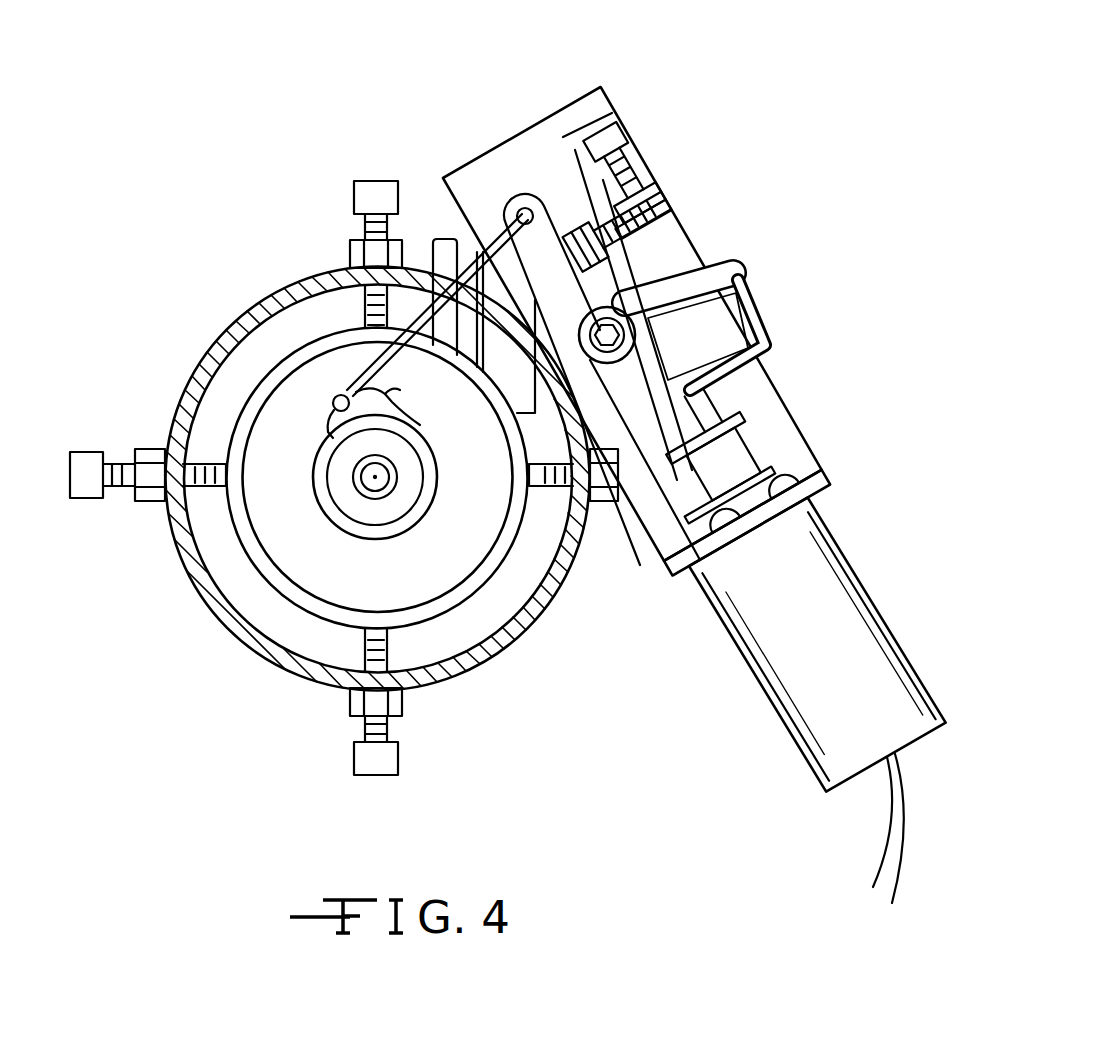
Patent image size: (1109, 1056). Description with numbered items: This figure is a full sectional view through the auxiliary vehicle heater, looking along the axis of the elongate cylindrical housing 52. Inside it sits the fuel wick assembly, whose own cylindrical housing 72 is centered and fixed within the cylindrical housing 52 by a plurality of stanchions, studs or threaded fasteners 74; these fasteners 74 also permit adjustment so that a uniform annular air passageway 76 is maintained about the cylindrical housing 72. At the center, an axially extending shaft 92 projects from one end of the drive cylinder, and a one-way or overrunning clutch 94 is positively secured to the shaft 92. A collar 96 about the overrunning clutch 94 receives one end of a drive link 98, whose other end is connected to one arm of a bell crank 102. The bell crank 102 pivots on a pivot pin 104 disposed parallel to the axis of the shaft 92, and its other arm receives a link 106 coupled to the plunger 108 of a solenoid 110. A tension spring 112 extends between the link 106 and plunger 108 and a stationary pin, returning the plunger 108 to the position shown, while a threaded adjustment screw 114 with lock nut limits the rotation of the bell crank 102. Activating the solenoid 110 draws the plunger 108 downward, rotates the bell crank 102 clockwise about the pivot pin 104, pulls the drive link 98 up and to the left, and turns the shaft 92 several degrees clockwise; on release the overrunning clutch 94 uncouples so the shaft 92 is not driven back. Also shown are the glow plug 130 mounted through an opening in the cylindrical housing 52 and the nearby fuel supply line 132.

The cylindrical housing 52 is at (300, 287).
The cylindrical housing 72 is at (257, 567).
The threaded fasteners 74 is at (350, 181).
The annular air passageway 76 is at (306, 632).
The shaft 92 is at (366, 480).
The overrunning clutch 94 is at (388, 508).
The collar 96 is at (337, 411).
The drive link 98 is at (386, 371).
The bell crank 102 is at (537, 233).
The pivot pin 104 is at (608, 345).
The link 106 is at (760, 300).
The plunger 108 is at (768, 415).
The solenoid 110 is at (834, 651).
The tension spring 112 is at (677, 253).
The threaded adjustment screw 114 is at (640, 163).
The glow plug 130 is at (503, 368).
The fuel supply line 132 is at (433, 240).